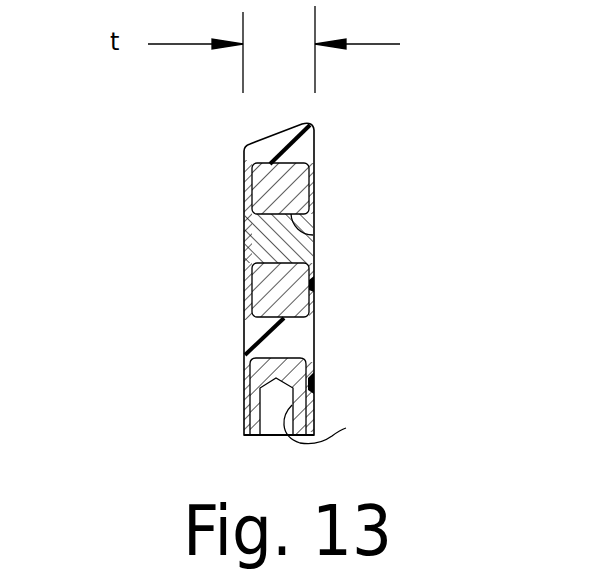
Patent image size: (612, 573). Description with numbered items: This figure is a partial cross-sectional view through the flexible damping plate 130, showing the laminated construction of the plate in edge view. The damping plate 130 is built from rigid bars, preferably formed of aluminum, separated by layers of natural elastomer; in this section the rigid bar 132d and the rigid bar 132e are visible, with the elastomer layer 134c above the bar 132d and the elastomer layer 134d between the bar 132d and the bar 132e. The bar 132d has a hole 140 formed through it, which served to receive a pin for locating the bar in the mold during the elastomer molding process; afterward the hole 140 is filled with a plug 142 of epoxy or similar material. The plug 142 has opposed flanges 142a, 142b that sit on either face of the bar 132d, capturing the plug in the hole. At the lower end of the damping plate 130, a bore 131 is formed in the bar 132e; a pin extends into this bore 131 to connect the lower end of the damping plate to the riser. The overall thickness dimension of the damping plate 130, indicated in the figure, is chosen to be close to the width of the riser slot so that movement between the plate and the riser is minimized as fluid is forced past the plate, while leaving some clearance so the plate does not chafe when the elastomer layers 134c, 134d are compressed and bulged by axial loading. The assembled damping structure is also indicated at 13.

The sealing element 13 is at (314, 372).
The flexible damping plate 130 is at (340, 131).
The bore 131 is at (342, 424).
The rigid bar 132d is at (244, 283).
The rigid bar 132e is at (245, 400).
The elastomer layer 134c is at (304, 148).
The elastomer layer 134d is at (252, 330).
The hole 140 is at (314, 235).
The plug 142 is at (243, 227).
The flange 142a is at (314, 283).
The flange 142b is at (244, 197).